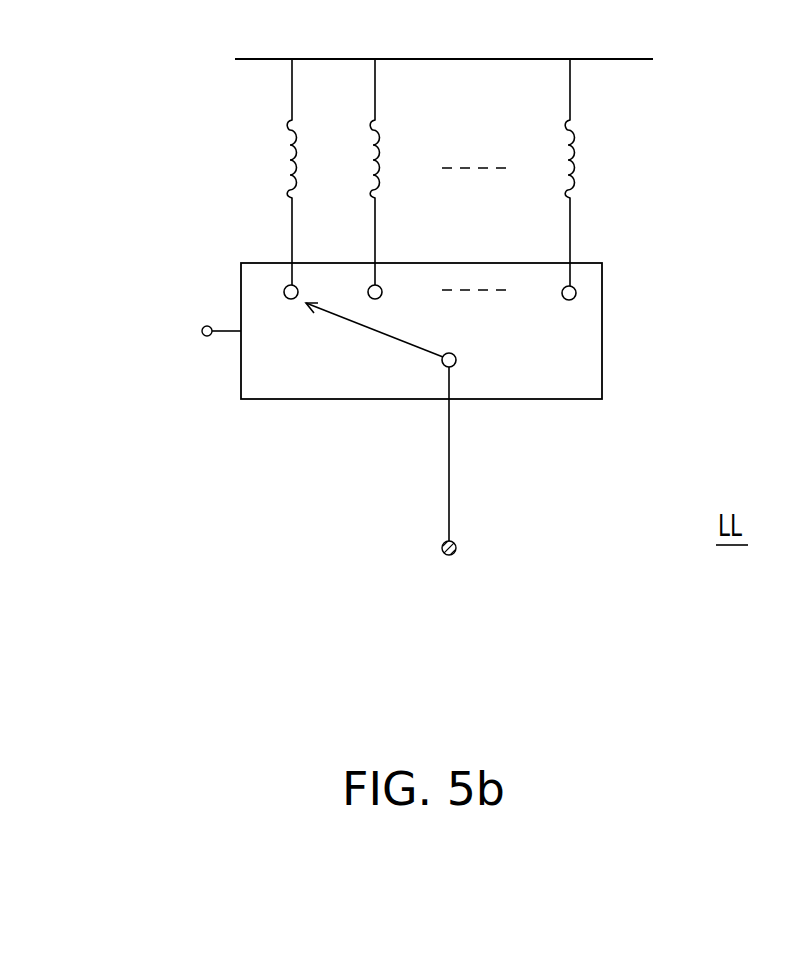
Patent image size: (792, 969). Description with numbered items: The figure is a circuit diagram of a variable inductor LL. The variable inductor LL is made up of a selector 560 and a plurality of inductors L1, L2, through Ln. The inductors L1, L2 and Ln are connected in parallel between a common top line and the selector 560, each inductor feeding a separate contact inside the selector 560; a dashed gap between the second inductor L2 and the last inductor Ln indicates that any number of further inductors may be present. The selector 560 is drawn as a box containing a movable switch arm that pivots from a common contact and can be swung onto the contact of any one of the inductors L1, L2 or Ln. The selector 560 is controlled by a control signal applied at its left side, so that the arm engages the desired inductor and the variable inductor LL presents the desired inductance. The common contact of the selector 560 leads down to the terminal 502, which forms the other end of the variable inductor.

The selector 560 is at (602, 345).
The terminal 502 is at (481, 467).
The inductor L1 is at (268, 172).
The inductor L2 is at (356, 172).
The inductor Ln is at (549, 172).